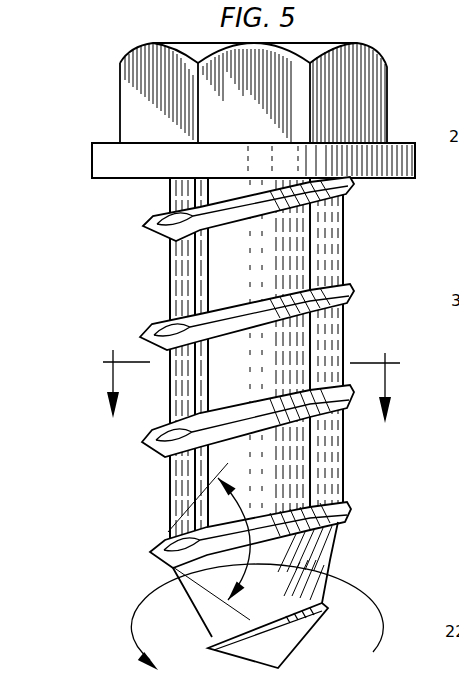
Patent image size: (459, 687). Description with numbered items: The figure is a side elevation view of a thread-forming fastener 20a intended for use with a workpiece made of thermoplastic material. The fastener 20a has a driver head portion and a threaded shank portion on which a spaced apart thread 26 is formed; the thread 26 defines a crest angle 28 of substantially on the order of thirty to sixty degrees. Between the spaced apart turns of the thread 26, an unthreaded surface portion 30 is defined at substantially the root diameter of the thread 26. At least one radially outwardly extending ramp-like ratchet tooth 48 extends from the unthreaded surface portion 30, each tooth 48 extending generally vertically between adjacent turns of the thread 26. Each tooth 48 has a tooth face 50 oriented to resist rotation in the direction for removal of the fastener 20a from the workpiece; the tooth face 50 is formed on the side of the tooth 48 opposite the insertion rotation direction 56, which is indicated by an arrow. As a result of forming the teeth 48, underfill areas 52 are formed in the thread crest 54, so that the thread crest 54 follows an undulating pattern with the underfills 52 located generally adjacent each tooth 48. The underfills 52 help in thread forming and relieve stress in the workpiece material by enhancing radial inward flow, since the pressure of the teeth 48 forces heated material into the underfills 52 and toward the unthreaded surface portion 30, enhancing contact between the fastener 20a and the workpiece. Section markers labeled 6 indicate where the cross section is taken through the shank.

The fastener 20a is at (92, 98).
The thread 26 is at (237, 305).
The crest angle 28 is at (243, 508).
The unthreaded surface portion 30 is at (312, 348).
The ratchet tooth 48 is at (332, 232).
The tooth face 50 is at (209, 378).
The underfill area 52 is at (163, 323).
The thread crest 54 is at (313, 277).
The insertion rotation direction 56 is at (133, 622).
The section line 6- 6 is at (248, 386).